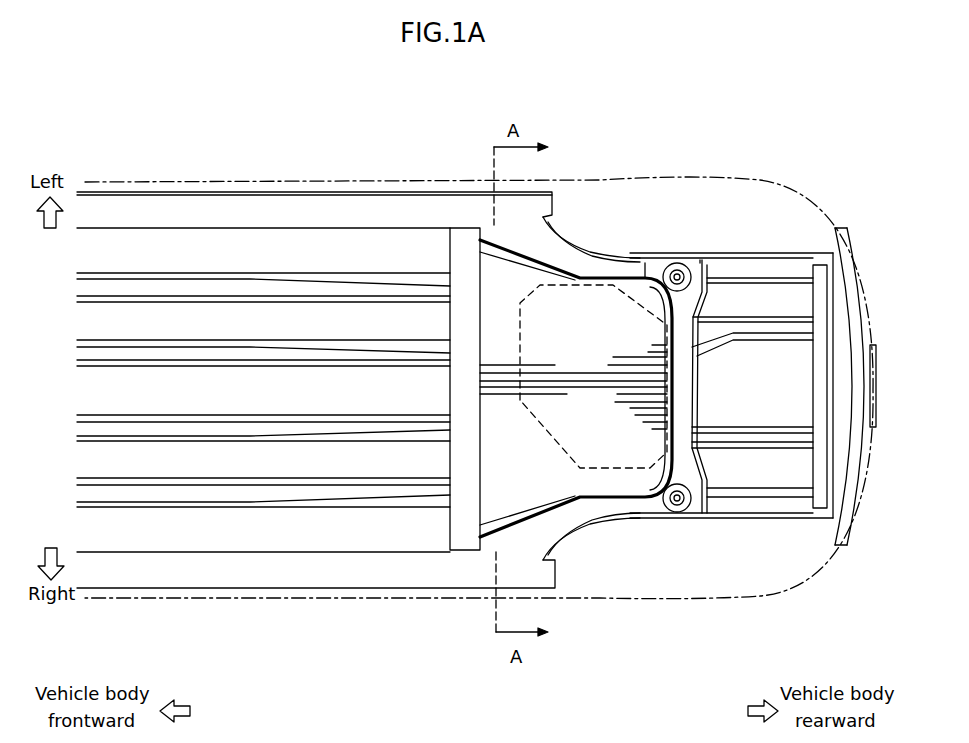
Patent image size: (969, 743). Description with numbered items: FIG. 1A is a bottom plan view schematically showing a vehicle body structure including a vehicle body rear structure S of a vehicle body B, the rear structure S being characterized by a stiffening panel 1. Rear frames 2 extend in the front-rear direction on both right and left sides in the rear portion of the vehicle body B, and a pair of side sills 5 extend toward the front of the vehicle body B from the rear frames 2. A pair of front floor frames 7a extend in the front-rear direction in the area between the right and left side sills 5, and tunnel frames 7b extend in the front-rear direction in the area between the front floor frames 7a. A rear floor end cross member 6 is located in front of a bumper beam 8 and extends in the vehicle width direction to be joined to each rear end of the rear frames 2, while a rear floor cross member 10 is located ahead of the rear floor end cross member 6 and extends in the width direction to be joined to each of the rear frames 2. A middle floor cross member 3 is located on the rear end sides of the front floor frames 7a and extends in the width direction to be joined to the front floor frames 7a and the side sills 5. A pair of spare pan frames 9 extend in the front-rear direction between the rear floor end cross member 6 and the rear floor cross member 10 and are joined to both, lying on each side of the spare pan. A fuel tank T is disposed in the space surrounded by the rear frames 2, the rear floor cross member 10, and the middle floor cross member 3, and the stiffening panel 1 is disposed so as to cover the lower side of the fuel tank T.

The stiffening panel 1 is at (527, 280).
The rear frames 2 is at (620, 267).
The middle floor cross member 3 is at (462, 528).
The side sills 5 is at (345, 195).
The rear floor end cross member 6 is at (822, 383).
The front floor frames 7a is at (128, 287).
The tunnel frames 7b is at (282, 354).
The bumper beam 8 is at (862, 316).
The spare pan frames 9 is at (769, 330).
The rear floor cross member 10 is at (682, 370).
The fuel tank T is at (605, 450).
The vehicle body B is at (166, 182).
The vehicle body rear structure S is at (680, 134).